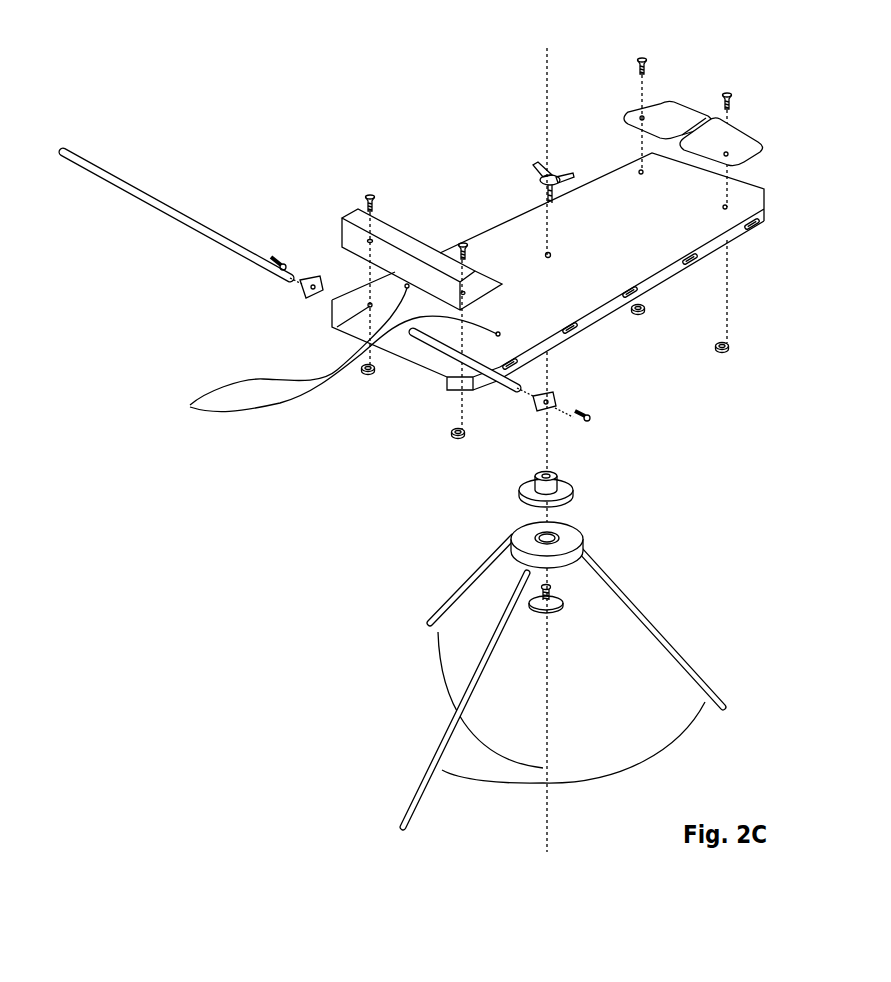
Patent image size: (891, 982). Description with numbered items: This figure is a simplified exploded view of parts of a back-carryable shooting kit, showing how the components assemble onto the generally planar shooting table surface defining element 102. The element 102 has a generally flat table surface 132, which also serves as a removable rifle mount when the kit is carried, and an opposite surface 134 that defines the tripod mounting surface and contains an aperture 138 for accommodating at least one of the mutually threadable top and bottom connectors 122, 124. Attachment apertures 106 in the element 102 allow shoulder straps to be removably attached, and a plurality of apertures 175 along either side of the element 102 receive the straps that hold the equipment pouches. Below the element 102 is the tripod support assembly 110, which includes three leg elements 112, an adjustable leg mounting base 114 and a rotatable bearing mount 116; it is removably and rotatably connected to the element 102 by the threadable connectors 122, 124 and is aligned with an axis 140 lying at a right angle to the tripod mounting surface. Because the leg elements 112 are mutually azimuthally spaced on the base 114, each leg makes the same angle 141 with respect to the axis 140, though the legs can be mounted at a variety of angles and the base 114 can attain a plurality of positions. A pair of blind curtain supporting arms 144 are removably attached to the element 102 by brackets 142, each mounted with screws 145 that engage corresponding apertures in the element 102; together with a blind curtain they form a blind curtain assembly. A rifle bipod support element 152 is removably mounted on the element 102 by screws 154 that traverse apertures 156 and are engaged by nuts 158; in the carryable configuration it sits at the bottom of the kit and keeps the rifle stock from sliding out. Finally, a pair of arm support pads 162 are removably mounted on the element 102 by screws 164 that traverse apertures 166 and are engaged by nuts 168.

The generally planar shooting table surface defining element 102 is at (750, 188).
The attachment apertures 106 is at (321, 351).
The tripod support assembly 110 is at (238, 105).
The leg elements 112 is at (457, 596).
The adjustable leg mounting base 114 is at (576, 538).
The rotatable bearing mount 116 is at (572, 489).
The top connector 122 is at (556, 175).
The bottom connector 124 is at (558, 610).
The generally flat table surface 132 is at (488, 234).
The opposite surface 134 is at (612, 320).
The aperture 138 is at (546, 253).
The axis 140 is at (544, 60).
The angle 141 is at (556, 722).
The brackets 142 is at (306, 294).
The blind curtain supporting arms 144 is at (141, 192).
The screws 145 is at (270, 256).
The rifle bipod support element 152 is at (387, 237).
The screws 154 is at (459, 246).
The apertures 156 is at (338, 330).
The nuts 158 is at (451, 432).
The arm support pads 162 is at (668, 113).
The screws 164 is at (646, 56).
The apertures 166 is at (723, 208).
The nuts 168 is at (718, 347).
The apertures 175 is at (634, 294).